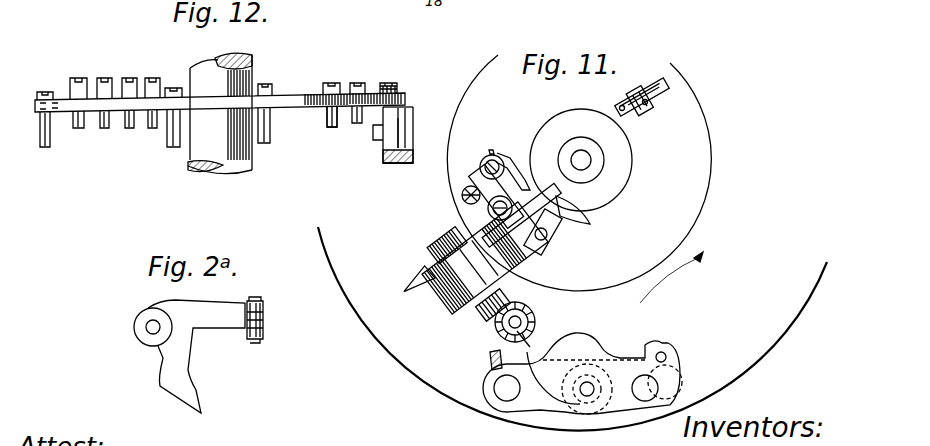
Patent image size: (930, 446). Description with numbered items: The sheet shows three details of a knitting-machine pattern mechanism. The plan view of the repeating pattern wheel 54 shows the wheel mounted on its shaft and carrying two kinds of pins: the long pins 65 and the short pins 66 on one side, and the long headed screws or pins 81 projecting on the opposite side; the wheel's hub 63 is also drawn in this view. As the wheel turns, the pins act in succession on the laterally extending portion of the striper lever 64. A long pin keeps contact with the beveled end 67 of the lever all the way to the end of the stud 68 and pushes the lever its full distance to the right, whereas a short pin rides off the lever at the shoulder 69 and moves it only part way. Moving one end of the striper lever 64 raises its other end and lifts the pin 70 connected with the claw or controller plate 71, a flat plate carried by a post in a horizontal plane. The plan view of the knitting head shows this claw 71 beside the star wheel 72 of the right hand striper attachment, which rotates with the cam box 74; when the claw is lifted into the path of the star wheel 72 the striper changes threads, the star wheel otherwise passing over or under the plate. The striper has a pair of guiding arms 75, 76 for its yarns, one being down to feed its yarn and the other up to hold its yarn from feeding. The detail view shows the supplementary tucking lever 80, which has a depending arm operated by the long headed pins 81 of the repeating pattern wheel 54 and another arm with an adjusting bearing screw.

In FIG. 12, the repeating pattern wheel 54 is at (100, 77).
In FIG. 12, the long headed screws or pins 81 is at (217, 112).
In FIG. 12, the roller 63 is at (220, 113).
In FIG. 12, the striper lever 64 is at (400, 163).
In FIG. 12, the long pins 65 is at (268, 135).
In FIG. 12, the short pins 66 is at (329, 110).
In FIG. 12, the beveled end 67 is at (400, 144).
In FIG. 12, the stud 68 is at (378, 130).
In FIG. 12, the shoulder 69 is at (396, 120).
In FIG. 2A, the supplementary tucking lever 80 is at (218, 320).
In FIG. 11, the pin 70 is at (593, 386).
In FIG. 11, the claw or controller plate 71 is at (553, 393).
In FIG. 11, the star wheel 72 is at (537, 313).
In FIG. 11, the cam box 74 is at (698, 190).
In FIG. 11, the guiding arm 75 is at (472, 240).
In FIG. 11, the guiding arm 76 is at (534, 250).